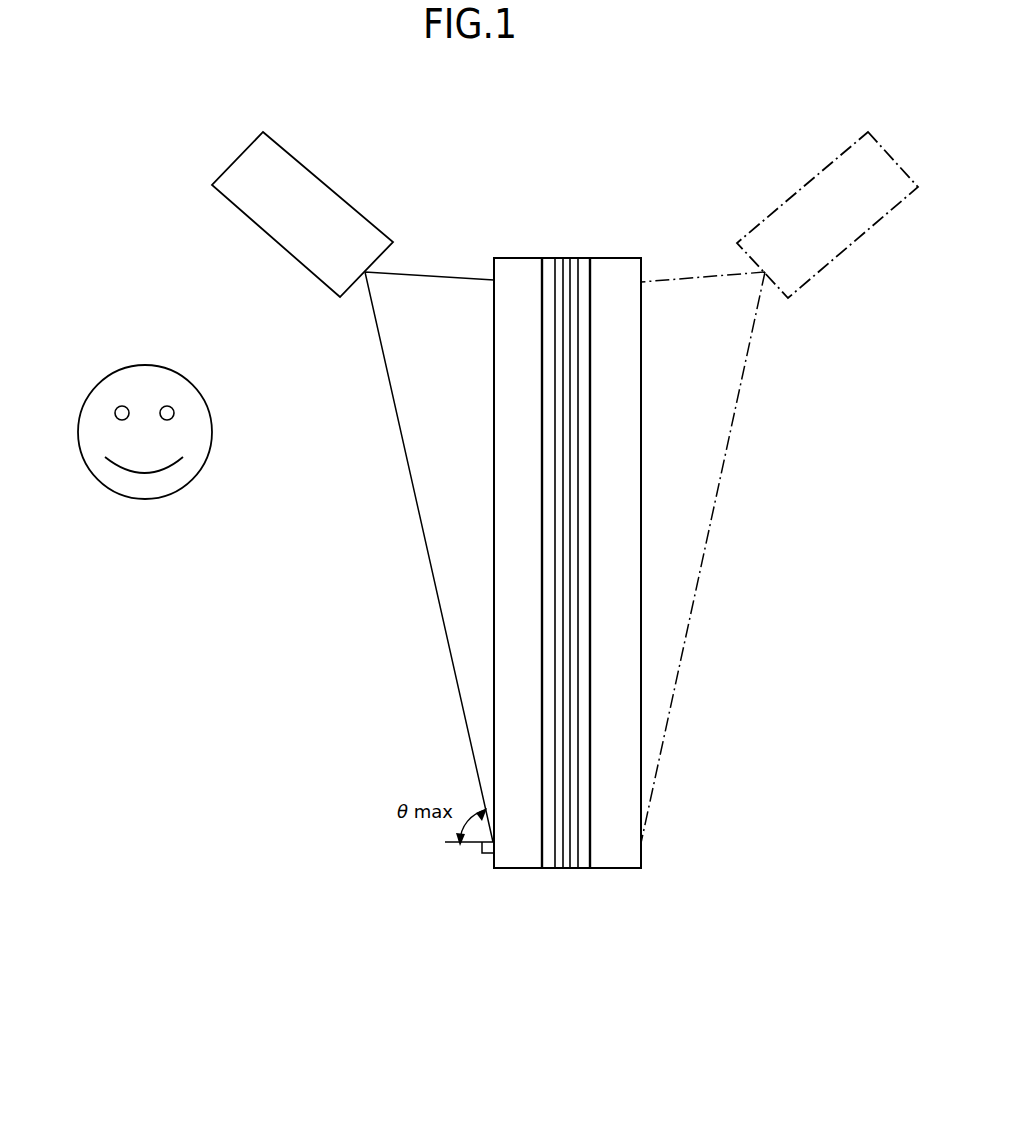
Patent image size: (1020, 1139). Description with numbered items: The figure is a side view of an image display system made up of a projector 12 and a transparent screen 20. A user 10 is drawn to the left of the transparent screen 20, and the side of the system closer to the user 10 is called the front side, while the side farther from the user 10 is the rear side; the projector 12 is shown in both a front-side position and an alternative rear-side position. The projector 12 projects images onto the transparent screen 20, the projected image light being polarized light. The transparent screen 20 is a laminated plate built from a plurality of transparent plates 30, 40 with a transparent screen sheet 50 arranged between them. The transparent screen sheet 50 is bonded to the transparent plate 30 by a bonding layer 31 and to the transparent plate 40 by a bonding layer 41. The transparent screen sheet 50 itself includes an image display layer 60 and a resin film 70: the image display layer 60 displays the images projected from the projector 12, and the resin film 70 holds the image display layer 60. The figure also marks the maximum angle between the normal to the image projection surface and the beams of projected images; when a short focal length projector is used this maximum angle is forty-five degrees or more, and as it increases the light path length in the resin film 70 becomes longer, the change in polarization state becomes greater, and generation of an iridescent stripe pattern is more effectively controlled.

The user 10 is at (90, 392).
The projector 12 is at (327, 182).
The transparent screen 20 is at (488, 249).
The transparent plate 30 is at (525, 267).
The bonding layer 31 is at (549, 267).
The transparent plate 40 is at (607, 267).
The bonding layer 41 is at (585, 267).
The transparent screen sheet 50 is at (567, 612).
The image display layer 60 is at (566, 590).
The resin film 70 is at (558, 868).